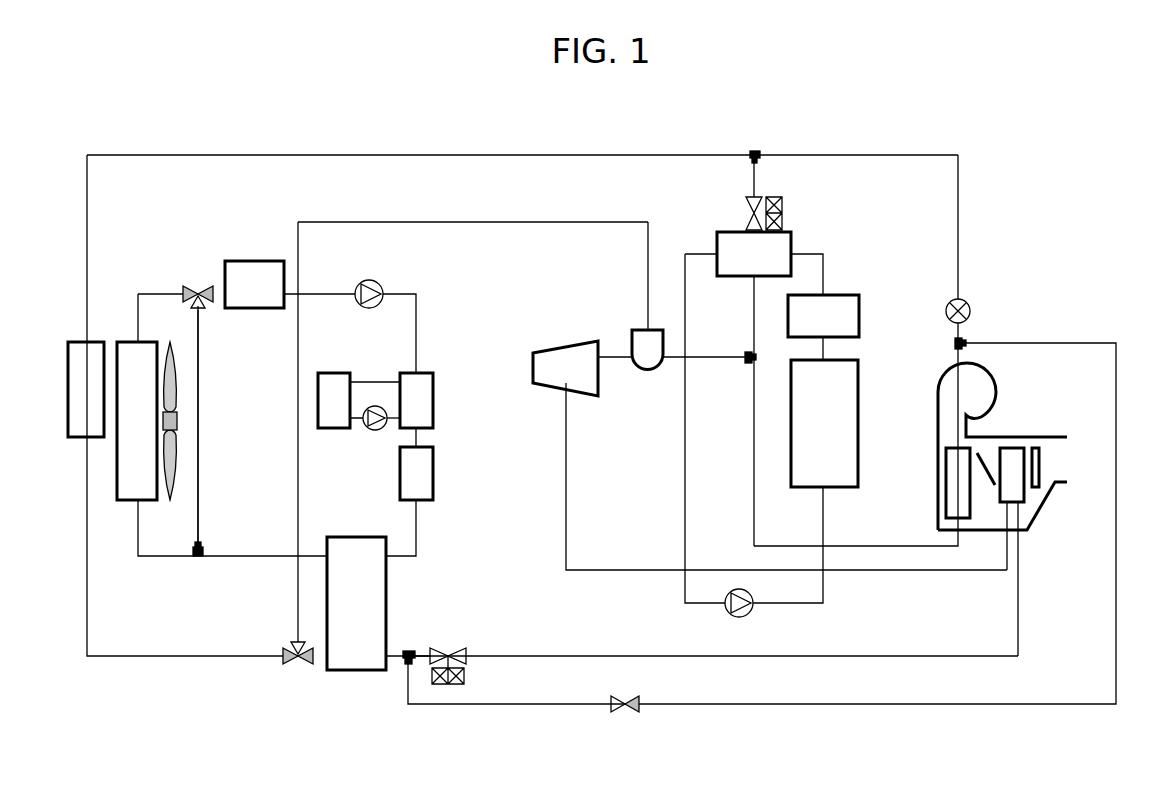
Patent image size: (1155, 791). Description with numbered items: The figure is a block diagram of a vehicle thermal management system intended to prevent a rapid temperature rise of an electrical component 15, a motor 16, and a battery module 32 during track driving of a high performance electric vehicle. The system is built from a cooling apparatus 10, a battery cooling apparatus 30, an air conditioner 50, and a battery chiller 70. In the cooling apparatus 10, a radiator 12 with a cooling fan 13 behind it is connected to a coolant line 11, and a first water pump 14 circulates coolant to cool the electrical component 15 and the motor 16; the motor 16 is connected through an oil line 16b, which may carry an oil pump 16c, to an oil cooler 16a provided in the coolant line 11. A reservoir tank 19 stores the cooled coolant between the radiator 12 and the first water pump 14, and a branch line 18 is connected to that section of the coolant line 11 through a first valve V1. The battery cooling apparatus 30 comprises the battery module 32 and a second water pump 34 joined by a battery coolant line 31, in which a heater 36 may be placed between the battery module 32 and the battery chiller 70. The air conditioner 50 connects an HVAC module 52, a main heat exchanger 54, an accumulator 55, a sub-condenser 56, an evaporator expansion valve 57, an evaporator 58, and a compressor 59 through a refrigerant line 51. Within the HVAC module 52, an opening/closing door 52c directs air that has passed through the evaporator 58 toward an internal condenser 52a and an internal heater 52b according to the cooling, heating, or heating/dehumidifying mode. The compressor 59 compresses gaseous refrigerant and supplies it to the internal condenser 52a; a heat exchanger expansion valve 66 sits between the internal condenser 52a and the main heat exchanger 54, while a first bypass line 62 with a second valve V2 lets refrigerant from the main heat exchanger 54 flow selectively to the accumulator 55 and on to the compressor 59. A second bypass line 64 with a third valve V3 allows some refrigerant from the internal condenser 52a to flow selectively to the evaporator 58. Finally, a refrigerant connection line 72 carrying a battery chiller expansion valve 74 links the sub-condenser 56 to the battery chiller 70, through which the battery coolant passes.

The cooling apparatus 10 is at (140, 282).
The coolant line 11 is at (241, 560).
The radiator 12 is at (126, 502).
The cooling fan 13 is at (170, 503).
The first water pump 14 is at (379, 281).
The electrical component 15 is at (433, 472).
The motor 16 is at (332, 373).
The oil cooler 16a is at (433, 397).
The oil line 16b is at (363, 412).
The oil pump 16c is at (377, 434).
The branch line 18 is at (200, 392).
The reservoir tank 19 is at (252, 261).
The first valve V1 is at (194, 284).
The second valve V2 is at (294, 666).
The third valve V3 is at (624, 717).
The battery cooling apparatus 30 is at (838, 262).
The battery coolant line 31 is at (685, 464).
The battery module 32 is at (859, 426).
The second water pump 34 is at (751, 607).
The heater 36 is at (860, 318).
The air conditioner 50 is at (972, 180).
The refrigerant line 51 is at (410, 155).
The HVAC module 52 is at (1041, 423).
The internal condenser 52a is at (1027, 500).
The internal heater 52b is at (1040, 458).
The opening/closing door 52c is at (986, 458).
The main heat exchanger 54 is at (352, 672).
The accumulator 55 is at (645, 372).
The sub-condenser 56 is at (68, 393).
The evaporator expansion valve 57 is at (971, 307).
The evaporator 58 is at (946, 486).
The compressor 59 is at (557, 352).
The first bypass line 62 is at (498, 221).
The second bypass line 64 is at (527, 706).
The heat exchanger expansion valve 66 is at (450, 644).
The battery chiller 70 is at (791, 239).
The refrigerant connection line 72 is at (754, 319).
The battery chiller expansion valve 74 is at (746, 210).